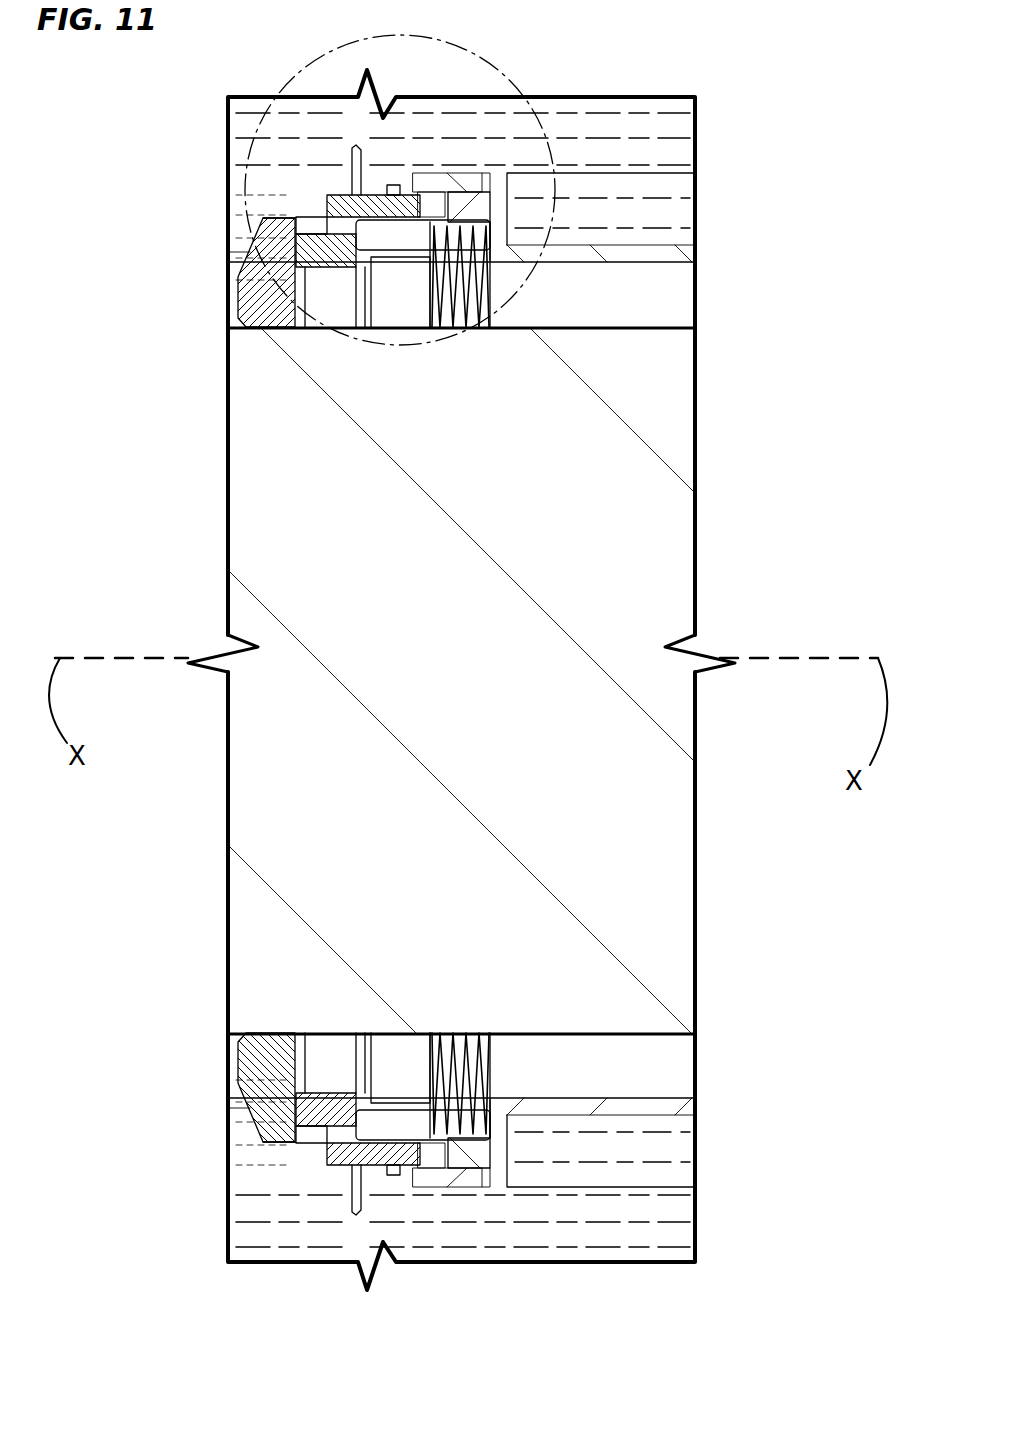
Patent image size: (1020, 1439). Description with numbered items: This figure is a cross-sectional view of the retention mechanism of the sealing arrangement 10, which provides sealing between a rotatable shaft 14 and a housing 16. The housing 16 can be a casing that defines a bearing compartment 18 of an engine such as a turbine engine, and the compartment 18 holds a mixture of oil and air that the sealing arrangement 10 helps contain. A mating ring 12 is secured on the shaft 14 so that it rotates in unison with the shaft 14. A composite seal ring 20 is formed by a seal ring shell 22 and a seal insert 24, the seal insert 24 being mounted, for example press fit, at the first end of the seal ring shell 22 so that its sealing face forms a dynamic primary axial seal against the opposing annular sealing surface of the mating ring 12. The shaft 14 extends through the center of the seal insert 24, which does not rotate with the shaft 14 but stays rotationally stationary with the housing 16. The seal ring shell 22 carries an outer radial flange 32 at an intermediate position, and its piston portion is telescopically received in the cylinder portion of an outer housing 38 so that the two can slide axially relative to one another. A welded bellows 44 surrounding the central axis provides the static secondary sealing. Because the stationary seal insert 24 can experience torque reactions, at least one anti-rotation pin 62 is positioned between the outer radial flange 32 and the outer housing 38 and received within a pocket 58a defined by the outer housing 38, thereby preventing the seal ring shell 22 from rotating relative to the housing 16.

The sealing arrangement 10 is at (727, 73).
The mating ring 12 is at (262, 290).
The rotatable shaft 14 is at (227, 787).
The housing 16 is at (623, 257).
The bearing compartment 18 is at (510, 219).
The composite seal ring 20 is at (321, 183).
The seal ring shell 22 is at (320, 227).
The seal insert 24 is at (320, 265).
The outer radial flange 32 is at (352, 152).
The outer housing 38 is at (472, 212).
The welded bellows 44 is at (462, 300).
The pocket 58a is at (430, 207).
The anti-rotation pin 62 is at (385, 208).